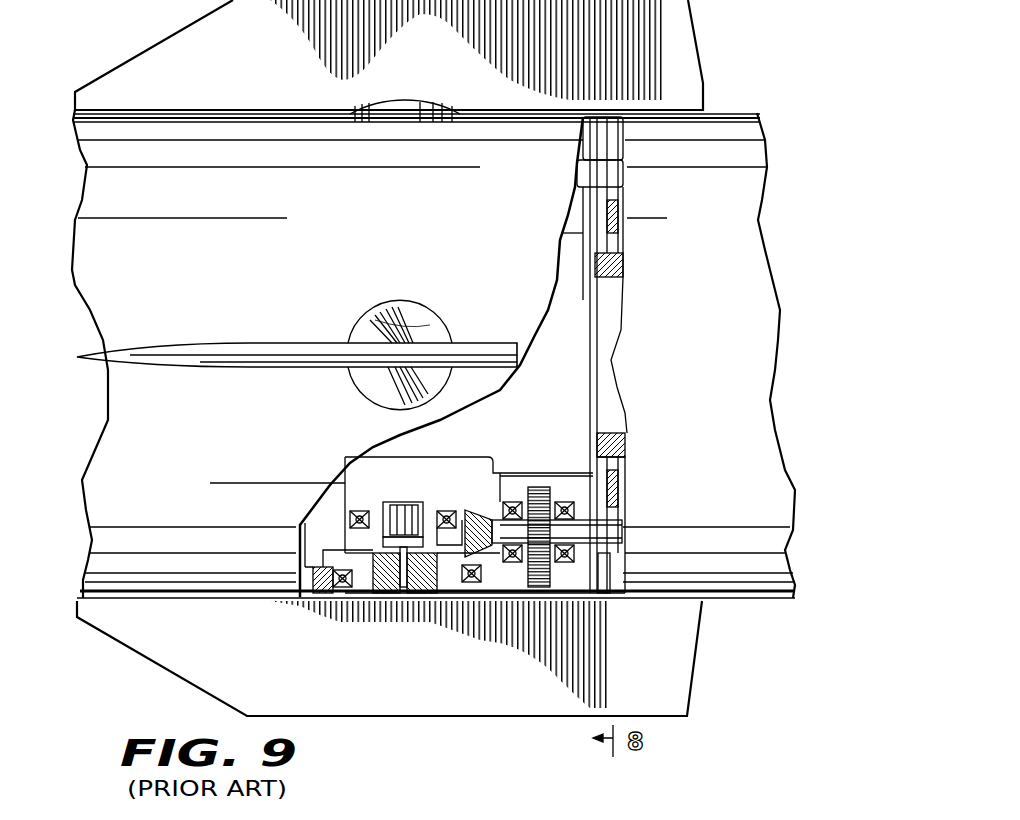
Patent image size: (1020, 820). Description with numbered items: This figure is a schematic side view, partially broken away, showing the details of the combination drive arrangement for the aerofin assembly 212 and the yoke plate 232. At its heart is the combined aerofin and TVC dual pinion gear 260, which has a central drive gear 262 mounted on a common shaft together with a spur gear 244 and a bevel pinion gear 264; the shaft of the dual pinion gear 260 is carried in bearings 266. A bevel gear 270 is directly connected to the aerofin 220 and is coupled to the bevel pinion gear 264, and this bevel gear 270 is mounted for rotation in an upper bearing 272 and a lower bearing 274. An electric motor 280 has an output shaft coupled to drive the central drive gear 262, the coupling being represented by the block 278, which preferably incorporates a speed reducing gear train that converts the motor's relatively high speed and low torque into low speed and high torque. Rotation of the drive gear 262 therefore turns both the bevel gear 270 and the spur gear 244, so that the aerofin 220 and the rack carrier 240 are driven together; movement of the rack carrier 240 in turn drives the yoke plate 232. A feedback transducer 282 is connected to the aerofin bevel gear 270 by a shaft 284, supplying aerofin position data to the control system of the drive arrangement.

The aerofin assembly 212 is at (369, 618).
The aerofin 220 is at (687, 716).
The yoke plate 232 is at (620, 502).
The rack carrier 240 is at (612, 575).
The spur gear 244 is at (617, 533).
The dual pinion gear 260 is at (558, 490).
The central drive gear 262 is at (543, 487).
The bevel pinion gear 264 is at (485, 560).
The bearings 266 is at (560, 565).
The bevel gear 270 is at (478, 600).
The upper bearing 272 is at (358, 508).
The lower bearing 274 is at (335, 592).
The coupling block 278 is at (495, 462).
The electric motor 280 is at (318, 530).
The feedback transducer 282 is at (397, 502).
The shaft 284 is at (408, 595).